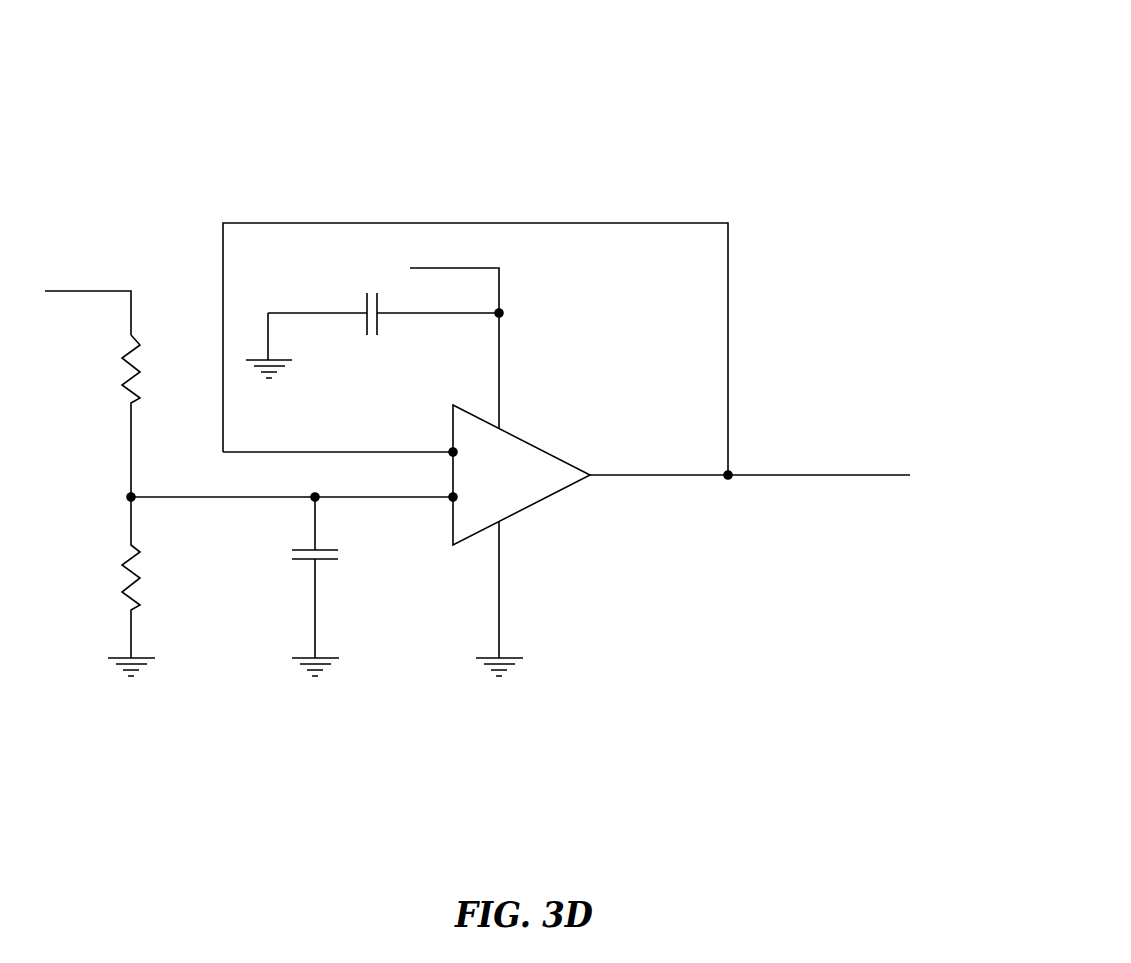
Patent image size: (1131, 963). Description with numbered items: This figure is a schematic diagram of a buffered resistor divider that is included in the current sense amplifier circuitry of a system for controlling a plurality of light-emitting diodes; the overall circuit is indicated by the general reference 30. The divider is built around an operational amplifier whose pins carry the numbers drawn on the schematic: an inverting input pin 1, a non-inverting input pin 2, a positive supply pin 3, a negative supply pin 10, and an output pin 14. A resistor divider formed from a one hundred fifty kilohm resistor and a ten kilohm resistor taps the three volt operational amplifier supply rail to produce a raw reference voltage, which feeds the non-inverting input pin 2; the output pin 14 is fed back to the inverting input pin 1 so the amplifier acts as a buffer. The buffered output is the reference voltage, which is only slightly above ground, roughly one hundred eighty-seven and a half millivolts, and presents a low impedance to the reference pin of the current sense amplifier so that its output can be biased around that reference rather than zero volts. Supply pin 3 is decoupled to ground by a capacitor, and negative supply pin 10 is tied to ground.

The voltage reference circuit 30 is at (1062, 91).
The inverting input pin of operational amplifier 1 is at (338, 440).
The non-inverting input pin of operational amplifier 2 is at (292, 487).
The positive supply pin of operational amplifier 3 is at (486, 370).
The negative supply pin of operational amplifier 10 is at (498, 599).
The output pin of operational amplifier 14 is at (659, 462).